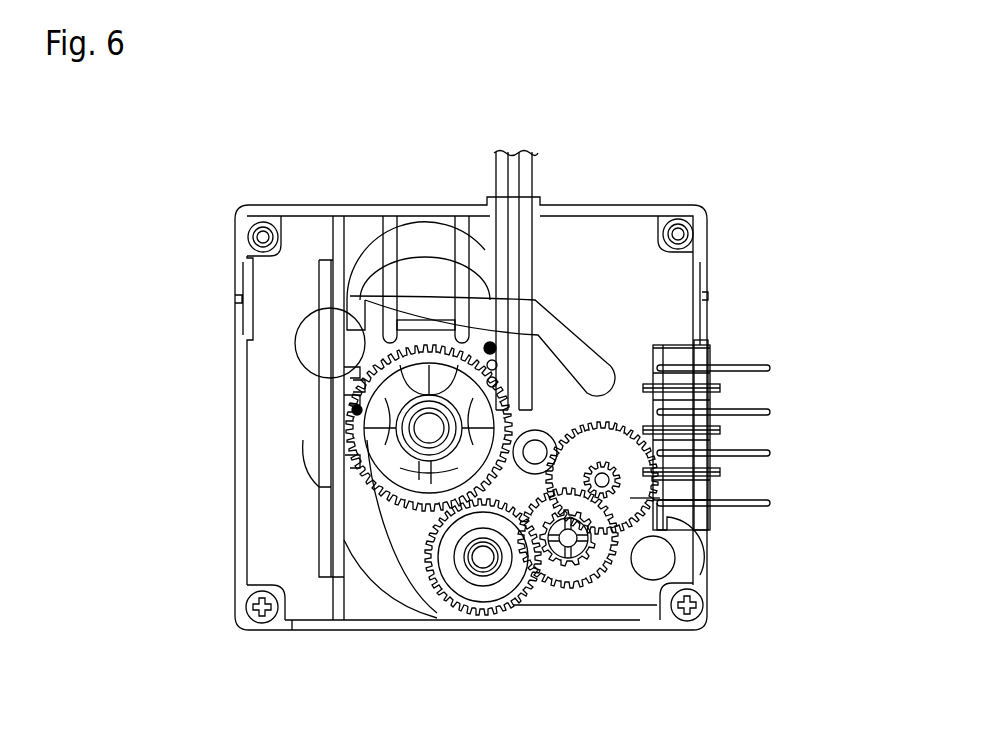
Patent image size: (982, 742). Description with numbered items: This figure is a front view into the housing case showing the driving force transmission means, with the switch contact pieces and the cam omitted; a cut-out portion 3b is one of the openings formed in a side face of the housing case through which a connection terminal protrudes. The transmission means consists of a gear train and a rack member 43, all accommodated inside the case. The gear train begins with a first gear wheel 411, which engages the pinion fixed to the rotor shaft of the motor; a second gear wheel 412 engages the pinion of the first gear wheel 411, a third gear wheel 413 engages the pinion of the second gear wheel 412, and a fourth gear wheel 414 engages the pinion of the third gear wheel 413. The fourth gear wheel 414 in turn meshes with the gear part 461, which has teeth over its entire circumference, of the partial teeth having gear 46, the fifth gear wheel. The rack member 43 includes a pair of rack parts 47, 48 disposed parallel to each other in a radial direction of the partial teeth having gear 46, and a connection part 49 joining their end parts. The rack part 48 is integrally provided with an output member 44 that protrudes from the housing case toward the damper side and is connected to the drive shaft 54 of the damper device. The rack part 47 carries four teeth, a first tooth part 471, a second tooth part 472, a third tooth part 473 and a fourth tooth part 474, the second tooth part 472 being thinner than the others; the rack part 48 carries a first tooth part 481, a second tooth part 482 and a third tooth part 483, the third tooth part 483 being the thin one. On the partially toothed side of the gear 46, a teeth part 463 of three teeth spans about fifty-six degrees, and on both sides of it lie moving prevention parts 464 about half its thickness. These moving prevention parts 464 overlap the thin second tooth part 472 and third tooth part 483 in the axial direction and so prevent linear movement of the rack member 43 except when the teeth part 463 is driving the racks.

The cut-out portion 3b is at (708, 612).
The rack member 43 is at (463, 140).
The output member 44 is at (522, 229).
The partial teeth having gear 46 is at (447, 488).
The gear part 461 is at (447, 488).
The rack part 47 is at (337, 287).
The rack part 48 is at (450, 272).
The connection part 49 is at (403, 247).
The drive shaft 54 is at (523, 172).
The first gear wheel 411 is at (660, 351).
The second gear wheel 412 is at (700, 512).
The third gear wheel 413 is at (580, 577).
The fourth gear wheel 414 is at (497, 592).
The teeth part 463 is at (420, 440).
The moving prevention part 464 is at (395, 440).
The first tooth part 471 is at (355, 470).
The second tooth part 472 is at (352, 408).
The third tooth part 473 is at (350, 390).
The fourth tooth part 474 is at (353, 367).
The first tooth part 481 is at (497, 382).
The second tooth part 482 is at (497, 365).
The third tooth part 483 is at (496, 347).